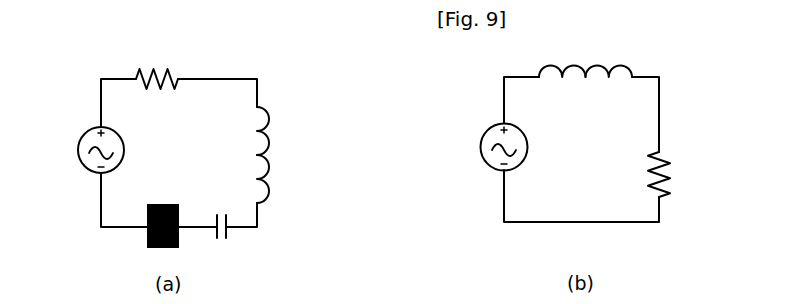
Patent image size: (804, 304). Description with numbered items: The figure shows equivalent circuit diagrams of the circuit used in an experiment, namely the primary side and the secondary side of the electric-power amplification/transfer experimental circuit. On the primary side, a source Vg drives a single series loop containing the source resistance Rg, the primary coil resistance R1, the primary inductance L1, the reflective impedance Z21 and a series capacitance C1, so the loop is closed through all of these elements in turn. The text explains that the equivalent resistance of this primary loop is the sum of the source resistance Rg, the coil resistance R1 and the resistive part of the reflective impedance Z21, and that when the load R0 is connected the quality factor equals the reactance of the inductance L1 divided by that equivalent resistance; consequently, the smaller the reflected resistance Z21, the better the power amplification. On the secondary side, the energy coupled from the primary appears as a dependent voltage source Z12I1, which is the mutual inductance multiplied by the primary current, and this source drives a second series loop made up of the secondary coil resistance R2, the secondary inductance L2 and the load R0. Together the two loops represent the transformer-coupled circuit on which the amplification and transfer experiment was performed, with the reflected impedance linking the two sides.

The source resistance Rg is at (157, 63).
The source voltage Vg is at (83, 150).
The primary coil resistance R1 is at (277, 131).
The primary inductance L1 is at (276, 179).
The reflective impedance Z21 is at (167, 213).
The transmitting side capacitance C1 is at (236, 238).
The receiving coil resistance R2 is at (562, 57).
The receiving coil inductance L2 is at (606, 57).
The induced voltage source Z12I1 is at (474, 147).
The load R0 is at (674, 174).